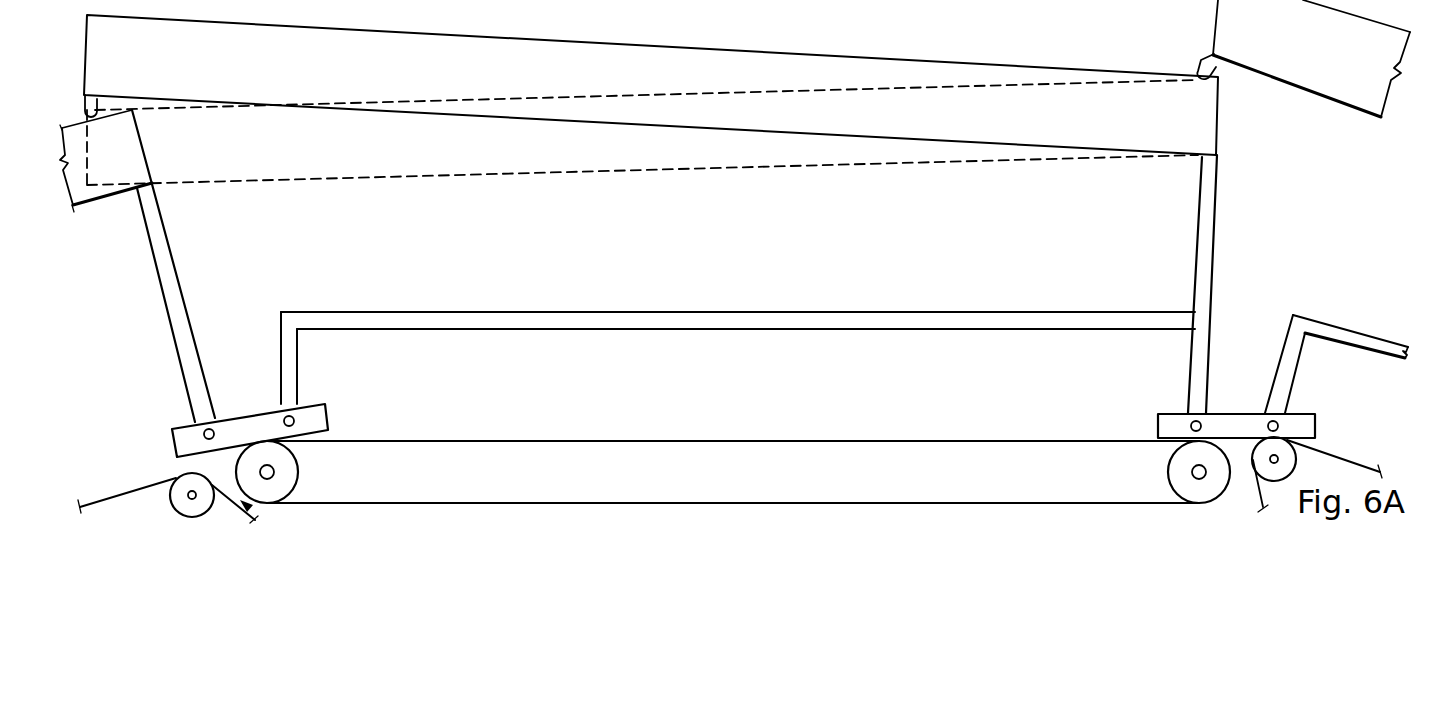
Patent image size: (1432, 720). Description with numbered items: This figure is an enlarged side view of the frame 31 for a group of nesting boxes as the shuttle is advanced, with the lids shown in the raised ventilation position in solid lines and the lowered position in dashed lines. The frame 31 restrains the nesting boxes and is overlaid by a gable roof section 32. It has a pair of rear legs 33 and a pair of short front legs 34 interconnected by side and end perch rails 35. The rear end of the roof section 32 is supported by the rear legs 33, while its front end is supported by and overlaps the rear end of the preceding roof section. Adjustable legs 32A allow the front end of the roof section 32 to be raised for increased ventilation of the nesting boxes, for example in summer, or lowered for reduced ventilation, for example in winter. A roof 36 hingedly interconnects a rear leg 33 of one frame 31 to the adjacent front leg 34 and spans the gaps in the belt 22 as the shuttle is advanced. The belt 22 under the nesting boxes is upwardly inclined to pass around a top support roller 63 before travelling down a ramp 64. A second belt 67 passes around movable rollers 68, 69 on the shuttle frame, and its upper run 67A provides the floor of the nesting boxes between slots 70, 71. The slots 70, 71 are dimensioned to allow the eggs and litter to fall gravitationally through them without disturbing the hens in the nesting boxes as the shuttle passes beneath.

The belt 22 is at (115, 483).
The frame 31 is at (1224, 207).
The gable roof section 32 is at (1224, 110).
The adjustable legs 32A is at (1205, 63).
The rear legs 33 is at (708, 266).
The short front legs 34 is at (283, 349).
The perch rails 35 is at (715, 323).
The roof 36 is at (327, 412).
The top support roller 63 is at (182, 487).
The ramp 64 is at (1276, 455).
The second belt 67 is at (733, 435).
The upper run 67A is at (661, 440).
The movable roller 68 is at (290, 471).
The movable roller 69 is at (1180, 470).
The slot 70 is at (1239, 452).
The slot 71 is at (252, 508).